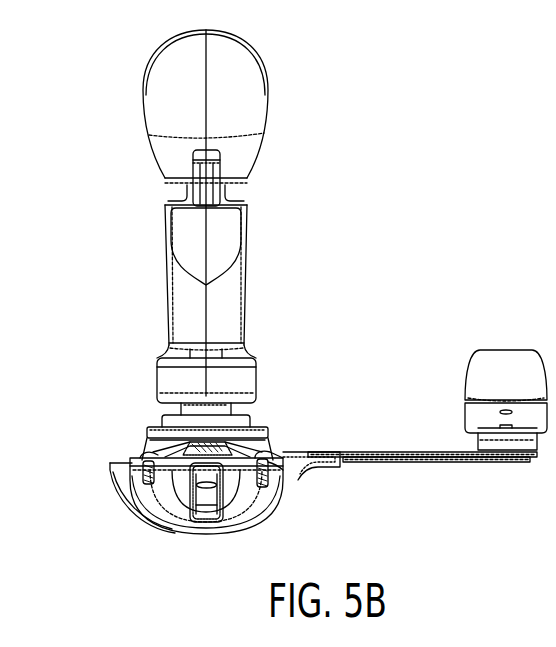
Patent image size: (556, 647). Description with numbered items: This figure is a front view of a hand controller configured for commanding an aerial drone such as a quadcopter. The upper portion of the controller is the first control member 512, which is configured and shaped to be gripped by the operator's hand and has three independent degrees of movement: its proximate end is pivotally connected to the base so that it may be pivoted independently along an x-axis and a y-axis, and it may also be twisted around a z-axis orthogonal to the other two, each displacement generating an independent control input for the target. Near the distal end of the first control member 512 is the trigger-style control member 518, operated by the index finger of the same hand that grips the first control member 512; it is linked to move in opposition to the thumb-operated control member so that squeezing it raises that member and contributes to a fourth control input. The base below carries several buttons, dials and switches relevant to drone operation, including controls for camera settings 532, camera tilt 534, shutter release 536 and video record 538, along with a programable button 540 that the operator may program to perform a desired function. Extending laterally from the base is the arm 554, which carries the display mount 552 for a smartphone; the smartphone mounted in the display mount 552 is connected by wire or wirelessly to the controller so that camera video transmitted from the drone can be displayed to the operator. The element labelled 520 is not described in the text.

The first control member 512 is at (225, 300).
The control member 518 is at (208, 180).
The handle head 520 is at (255, 93).
The camera settings 532 is at (215, 447).
The camera tilt 534 is at (208, 505).
The shutter release 536 is at (264, 488).
The video record 538 is at (268, 475).
The programable button 540 is at (148, 482).
The display mount 552 is at (510, 367).
The arm 554 is at (366, 452).